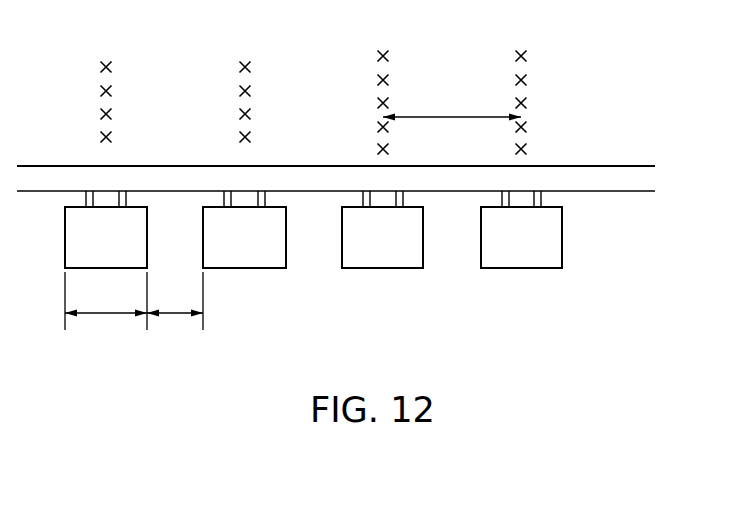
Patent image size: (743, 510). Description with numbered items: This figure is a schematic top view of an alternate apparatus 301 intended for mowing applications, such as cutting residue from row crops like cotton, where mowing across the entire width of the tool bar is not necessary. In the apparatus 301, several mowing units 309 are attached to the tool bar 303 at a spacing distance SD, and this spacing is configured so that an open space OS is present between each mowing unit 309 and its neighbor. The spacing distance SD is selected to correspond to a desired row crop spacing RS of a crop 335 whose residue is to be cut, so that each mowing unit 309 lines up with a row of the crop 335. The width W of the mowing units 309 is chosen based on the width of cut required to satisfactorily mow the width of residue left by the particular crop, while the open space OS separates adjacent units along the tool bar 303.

The alternate apparatus 301 is at (628, 68).
The tool bar 303 is at (613, 191).
The mowing unit 309 is at (520, 268).
The crop 335 is at (250, 92).
The row crop spacing RS is at (436, 117).
The spacing distance SD is at (477, 78).
The width W is at (104, 313).
The open space OS is at (174, 313).